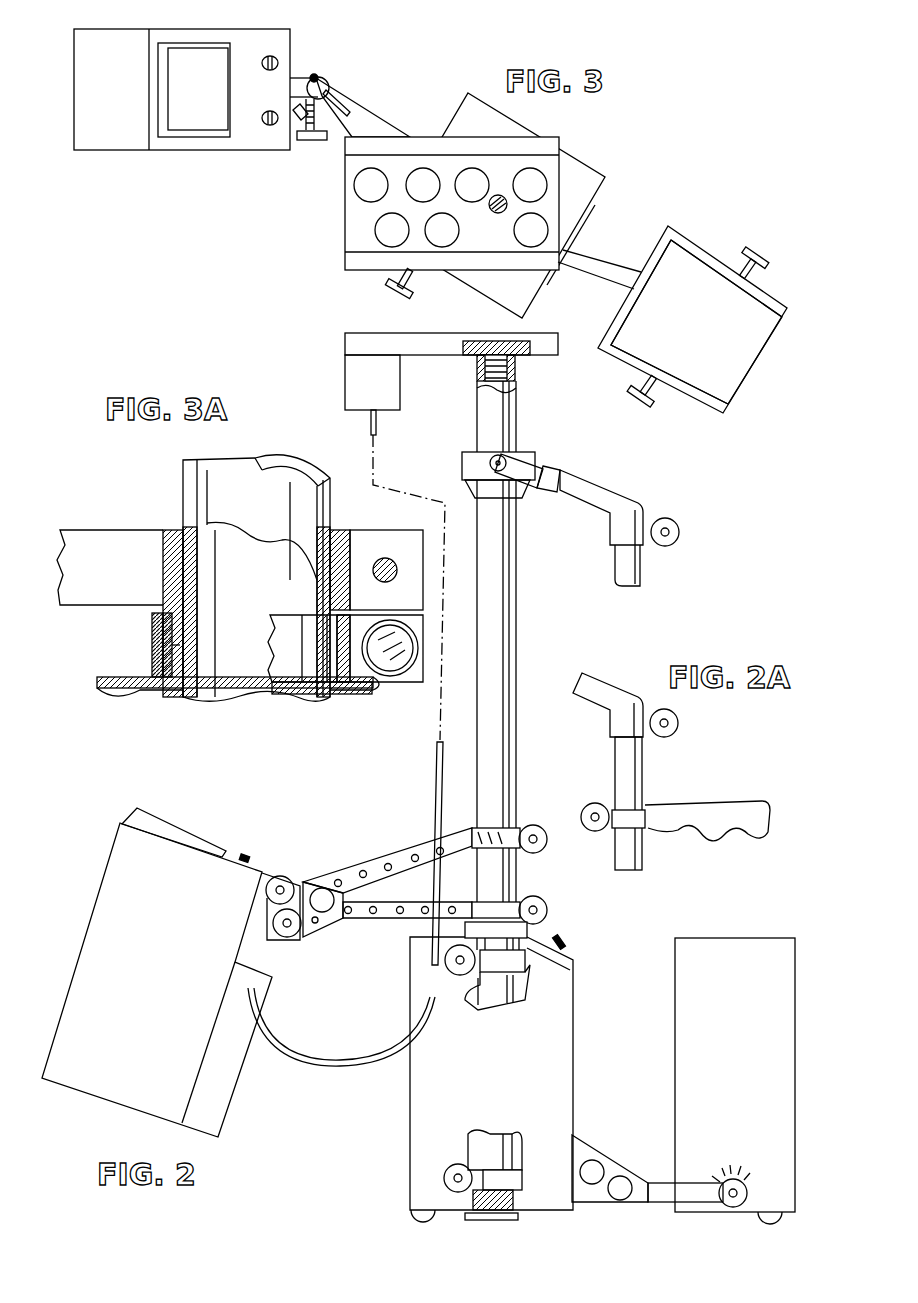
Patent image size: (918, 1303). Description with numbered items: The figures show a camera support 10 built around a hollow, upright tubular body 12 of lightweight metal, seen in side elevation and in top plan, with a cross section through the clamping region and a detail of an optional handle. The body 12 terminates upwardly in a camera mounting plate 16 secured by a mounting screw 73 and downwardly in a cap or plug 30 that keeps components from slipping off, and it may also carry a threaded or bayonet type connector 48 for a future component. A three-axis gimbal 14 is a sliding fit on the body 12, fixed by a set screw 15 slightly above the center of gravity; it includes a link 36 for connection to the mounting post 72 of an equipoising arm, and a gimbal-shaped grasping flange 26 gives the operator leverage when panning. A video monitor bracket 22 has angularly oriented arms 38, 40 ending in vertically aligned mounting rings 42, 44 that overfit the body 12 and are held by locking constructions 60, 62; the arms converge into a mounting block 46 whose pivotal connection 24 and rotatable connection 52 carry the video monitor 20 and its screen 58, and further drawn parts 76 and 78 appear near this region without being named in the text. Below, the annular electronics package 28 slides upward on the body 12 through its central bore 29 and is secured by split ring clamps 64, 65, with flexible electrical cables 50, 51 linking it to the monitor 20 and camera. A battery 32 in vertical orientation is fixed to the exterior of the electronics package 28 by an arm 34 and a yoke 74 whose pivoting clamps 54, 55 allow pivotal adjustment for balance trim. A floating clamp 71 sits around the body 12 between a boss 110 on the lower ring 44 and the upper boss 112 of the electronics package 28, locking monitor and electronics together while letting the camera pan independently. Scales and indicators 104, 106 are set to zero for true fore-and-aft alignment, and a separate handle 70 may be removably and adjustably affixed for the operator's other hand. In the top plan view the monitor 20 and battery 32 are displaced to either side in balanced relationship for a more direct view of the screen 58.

In FIG. 3, the camera support 10 is at (542, 447).
In FIG. 3, the tubular body 12 is at (510, 627).
In FIG. 3A, the tubular body 12 is at (215, 478).
In FIG. 3, the three-axis gimbal 14 is at (463, 458).
In FIG. 3, the set screw 15 is at (470, 490).
In FIG. 3, the camera mounting plate 16 is at (345, 238).
In FIG. 3, the video monitor 20 is at (280, 42).
In FIG. 2, the video monitor 20 is at (90, 920).
In FIG. 3, the video monitor bracket 22 is at (370, 102).
In FIG. 2, the video monitor bracket 22 is at (330, 882).
In FIG. 3, the pivotal connection 24 is at (328, 82).
In FIG. 2, the pivotal connection 24 is at (285, 876).
In FIG. 3, the grasping flange 26 is at (546, 488).
In FIG. 3, the electronics package 28 is at (585, 165).
In FIG. 3A, the electronics package 28 is at (122, 688).
In FIG. 2, the electronics package 28 is at (412, 1112).
In FIG. 3A, the central bore 29 is at (315, 595).
In FIG. 2, the central bore 29 is at (525, 988).
In FIG. 2, the cap or plug 30 is at (500, 1222).
In FIG. 3, the battery 32 is at (750, 360).
In FIG. 2, the battery 32 is at (768, 1013).
In FIG. 3, the arm 34 is at (612, 252).
In FIG. 2, the arm 34 is at (612, 1162).
In FIG. 3, the link 36 is at (600, 488).
In FIG. 2A, the link 36 is at (605, 692).
In FIG. 3, the arm 38 is at (393, 125).
In FIG. 2, the arm 38 is at (458, 838).
In FIG. 2, the arm 40 is at (462, 904).
In FIG. 2, the mounting ring 42 is at (508, 834).
In FIG. 3A, the mounting ring 44 is at (150, 553).
In FIG. 2, the mounting ring 44 is at (505, 904).
In FIG. 2, the mounting block 46 is at (330, 936).
In FIG. 2, the threaded or bayonet type connector 48 is at (530, 1183).
In FIG. 3, the flexible electrical cable 50 is at (371, 425).
In FIG. 2, the flexible electrical cable 50 is at (437, 772).
In FIG. 2, the flexible electrical cable 51 is at (345, 1058).
In FIG. 2, the rotatable connection 52 is at (292, 938).
In FIG. 3, the pivoting clamp 54 is at (648, 397).
In FIG. 2, the pivoting clamp 54 is at (745, 1192).
In FIG. 3, the pivoting clamp 55 is at (758, 255).
In FIG. 3, the screen 58 is at (213, 135).
In FIG. 2, the screen 58 is at (175, 825).
In FIG. 2, the locking construction 60 is at (547, 843).
In FIG. 2, the locking construction 62 is at (548, 910).
In FIG. 2, the split ring clamp 64 is at (445, 1178).
In FIG. 3, the split ring clamp 65 is at (398, 292).
In FIG. 2, the split ring clamp 65 is at (455, 972).
In FIG. 2A, the handle 70 is at (722, 822).
In FIG. 3A, the floating clamp 71 is at (300, 668).
In FIG. 2, the floating clamp 71 is at (510, 930).
In FIG. 3, the mounting post 72 is at (625, 582).
In FIG. 2A, the mounting post 72 is at (628, 802).
In FIG. 3, the mounting screw 73 is at (500, 214).
In FIG. 3, the yoke 74 is at (697, 238).
In FIG. 2, the yoke 74 is at (663, 1203).
In FIG. 2, the slide block 76 is at (508, 966).
In FIG. 3, the adjusting screw 78 is at (298, 128).
In FIG. 2, the adjusting screw 78 is at (283, 923).
In FIG. 2, the scale and indicator 104 is at (735, 1175).
In FIG. 2, the scale and indicator 106 is at (485, 828).
In FIG. 3A, the boss 110 is at (158, 620).
In FIG. 3A, the boss 112 is at (160, 656).